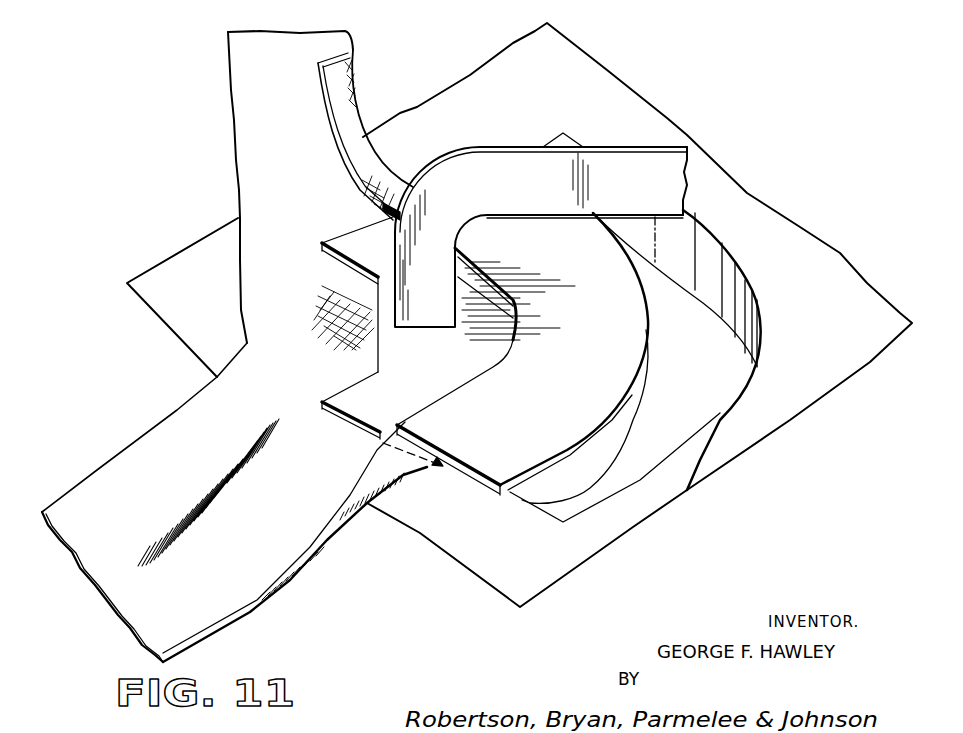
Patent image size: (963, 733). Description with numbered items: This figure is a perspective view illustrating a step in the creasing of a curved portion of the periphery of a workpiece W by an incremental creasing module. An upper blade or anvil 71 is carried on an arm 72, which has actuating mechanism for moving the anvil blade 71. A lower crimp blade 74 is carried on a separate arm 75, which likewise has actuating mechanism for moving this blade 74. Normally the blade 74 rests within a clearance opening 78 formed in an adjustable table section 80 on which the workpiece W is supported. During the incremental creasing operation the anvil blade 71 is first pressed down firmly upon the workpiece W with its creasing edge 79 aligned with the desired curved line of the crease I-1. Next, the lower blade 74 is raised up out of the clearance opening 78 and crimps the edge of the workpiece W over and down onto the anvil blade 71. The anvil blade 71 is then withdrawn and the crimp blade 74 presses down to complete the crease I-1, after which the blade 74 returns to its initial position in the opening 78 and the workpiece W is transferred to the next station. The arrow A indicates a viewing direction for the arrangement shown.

The workpiece W is at (215, 392).
The upper blade or anvil 71 is at (352, 392).
The arm 72 is at (597, 162).
The lower crimp blade 74 is at (620, 362).
The arm 75 is at (608, 440).
The clearance opening 78 is at (727, 360).
The creasing edge 79 is at (445, 468).
The adjustable table section 80 is at (793, 410).
The crease I-1 is at (403, 480).
The direction of view arrow A is at (753, 153).